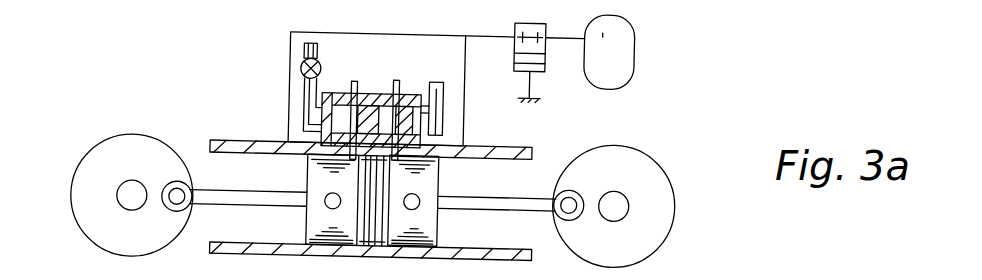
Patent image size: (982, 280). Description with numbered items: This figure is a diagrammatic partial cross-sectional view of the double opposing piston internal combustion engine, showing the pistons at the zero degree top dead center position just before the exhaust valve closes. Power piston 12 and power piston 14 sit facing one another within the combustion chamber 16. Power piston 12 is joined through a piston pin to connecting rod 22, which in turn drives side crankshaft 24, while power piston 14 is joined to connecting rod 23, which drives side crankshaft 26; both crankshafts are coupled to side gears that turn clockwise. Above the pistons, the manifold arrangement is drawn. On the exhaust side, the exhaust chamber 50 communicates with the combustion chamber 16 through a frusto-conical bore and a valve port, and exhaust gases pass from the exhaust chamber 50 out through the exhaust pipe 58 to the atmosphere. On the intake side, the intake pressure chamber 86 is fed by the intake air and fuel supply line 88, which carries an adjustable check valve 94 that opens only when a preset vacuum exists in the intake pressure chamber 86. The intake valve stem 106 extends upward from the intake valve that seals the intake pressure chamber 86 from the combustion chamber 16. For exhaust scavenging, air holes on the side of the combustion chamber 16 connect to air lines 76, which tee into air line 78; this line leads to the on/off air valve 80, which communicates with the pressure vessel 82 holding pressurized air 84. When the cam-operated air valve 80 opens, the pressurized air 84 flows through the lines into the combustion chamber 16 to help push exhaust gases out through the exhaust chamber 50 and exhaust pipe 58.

The power piston 12 is at (323, 218).
The power piston 14 is at (425, 223).
The combustion chamber 16 is at (466, 150).
The connecting rod 22 is at (243, 197).
The connecting rod 23 is at (508, 202).
The side crankshaft 24 is at (87, 153).
The side crankshaft 26 is at (659, 163).
The exhaust chamber 50 is at (401, 118).
The exhaust pipe 58 is at (444, 117).
The air lines 76 is at (290, 49).
The air line 78 is at (503, 17).
The air valve 80 is at (544, 66).
The pressure vessel 82 is at (633, 54).
The pressurized air 84 is at (620, 65).
The intake pressure chamber 86 is at (363, 111).
The intake air and fuel supply line 88 is at (304, 111).
The adjustable check valve 94 is at (299, 67).
The intake valve stem 106 is at (351, 84).